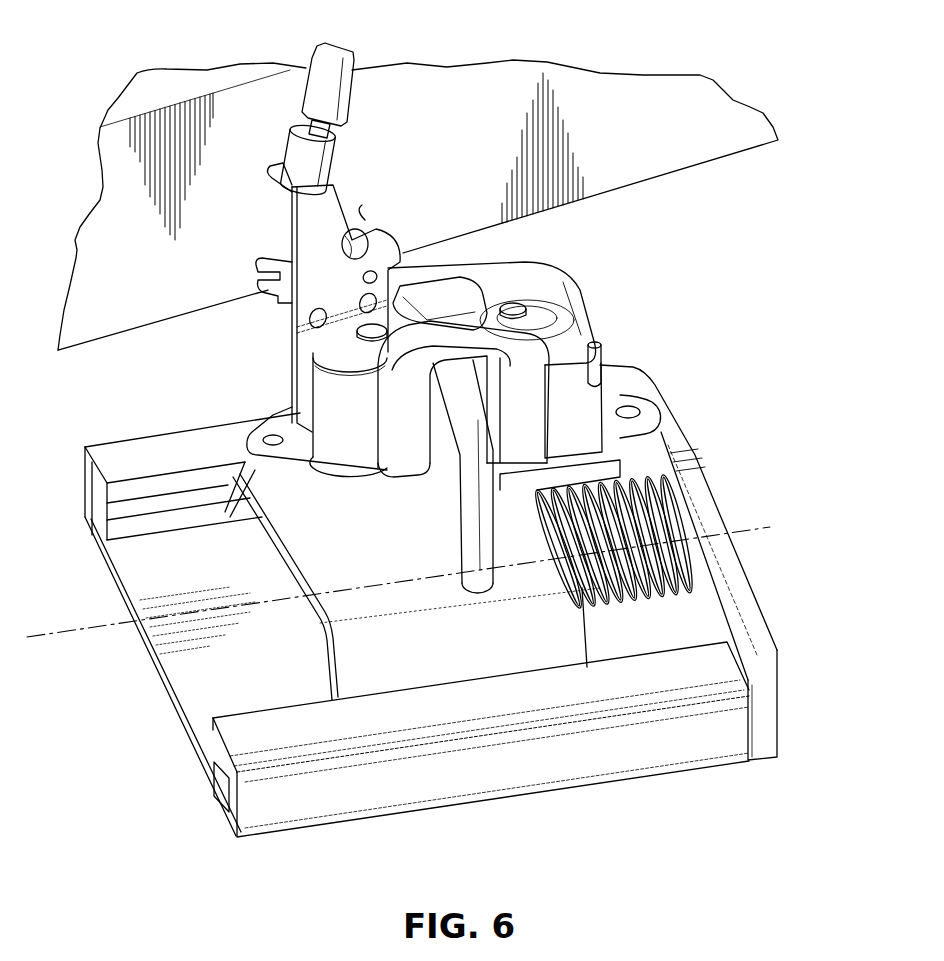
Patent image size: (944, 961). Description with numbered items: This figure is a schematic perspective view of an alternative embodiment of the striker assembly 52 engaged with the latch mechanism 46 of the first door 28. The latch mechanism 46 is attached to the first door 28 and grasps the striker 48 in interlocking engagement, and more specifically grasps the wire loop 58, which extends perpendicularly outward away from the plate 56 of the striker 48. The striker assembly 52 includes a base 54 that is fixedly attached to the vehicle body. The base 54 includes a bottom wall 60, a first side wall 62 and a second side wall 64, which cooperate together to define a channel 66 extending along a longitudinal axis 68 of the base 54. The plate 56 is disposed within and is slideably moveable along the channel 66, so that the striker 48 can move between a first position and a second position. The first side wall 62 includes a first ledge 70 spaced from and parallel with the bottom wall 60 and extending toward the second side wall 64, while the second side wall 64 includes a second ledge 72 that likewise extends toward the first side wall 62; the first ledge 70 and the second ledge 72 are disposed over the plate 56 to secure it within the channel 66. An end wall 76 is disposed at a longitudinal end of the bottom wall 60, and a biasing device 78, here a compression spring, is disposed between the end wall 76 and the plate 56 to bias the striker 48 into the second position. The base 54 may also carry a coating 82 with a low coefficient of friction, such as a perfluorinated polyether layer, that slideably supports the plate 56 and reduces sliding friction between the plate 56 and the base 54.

The first door 28 is at (661, 77).
The latch mechanism 46 is at (527, 268).
The striker 48 is at (460, 498).
The striker assembly 52 is at (645, 331).
The base 54 is at (414, 619).
The plate 56 is at (267, 541).
The wire loop 58 is at (462, 535).
The bottom wall 60 is at (183, 668).
The first side wall 62 is at (260, 800).
The second side wall 64 is at (85, 470).
The channel 66 is at (243, 686).
The longitudinal axis 68 is at (750, 527).
The first ledge 70 is at (293, 738).
The second ledge 72 is at (133, 457).
The end wall 76 is at (743, 570).
The biasing device 78 is at (668, 603).
The coating 82 is at (122, 547).